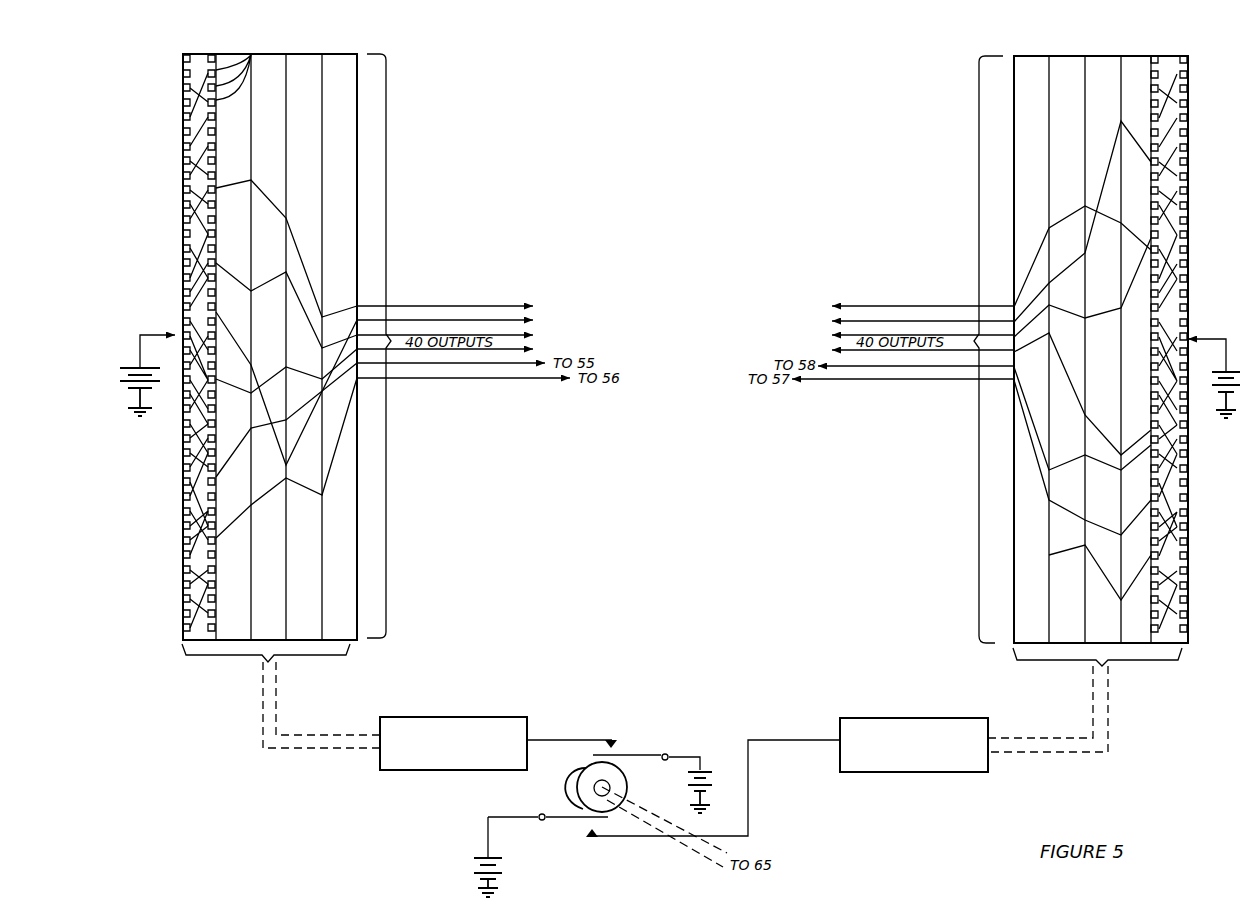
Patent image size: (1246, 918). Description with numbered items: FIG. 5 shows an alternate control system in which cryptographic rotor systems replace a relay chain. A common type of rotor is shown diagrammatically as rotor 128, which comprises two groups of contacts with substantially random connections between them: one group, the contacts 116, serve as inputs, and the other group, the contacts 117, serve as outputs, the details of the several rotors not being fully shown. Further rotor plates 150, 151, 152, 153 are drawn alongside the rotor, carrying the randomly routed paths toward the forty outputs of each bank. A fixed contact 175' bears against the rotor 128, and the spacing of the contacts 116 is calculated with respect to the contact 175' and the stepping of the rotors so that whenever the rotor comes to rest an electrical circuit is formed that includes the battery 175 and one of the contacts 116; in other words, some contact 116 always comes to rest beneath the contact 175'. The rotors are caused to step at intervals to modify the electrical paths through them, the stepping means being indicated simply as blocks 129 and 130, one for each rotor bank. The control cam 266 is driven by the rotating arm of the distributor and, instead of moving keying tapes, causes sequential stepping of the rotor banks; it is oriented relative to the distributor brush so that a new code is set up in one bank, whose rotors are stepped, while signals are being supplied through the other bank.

The input contacts 116 is at (182, 598).
The rotor 128 is at (198, 53).
The jumper wires 150 is at (235, 52).
The output contacts 117 is at (252, 53).
The rotor plate 151 is at (275, 52).
The rotor plate 152 is at (303, 60).
The rotor plate 153 is at (343, 60).
The battery 175 is at (123, 390).
The fixed contact 175' is at (153, 328).
The rotor stepping control magnet 129 is at (509, 718).
The rotor stepping control magnet 130 is at (972, 714).
The control cam 266 is at (567, 800).